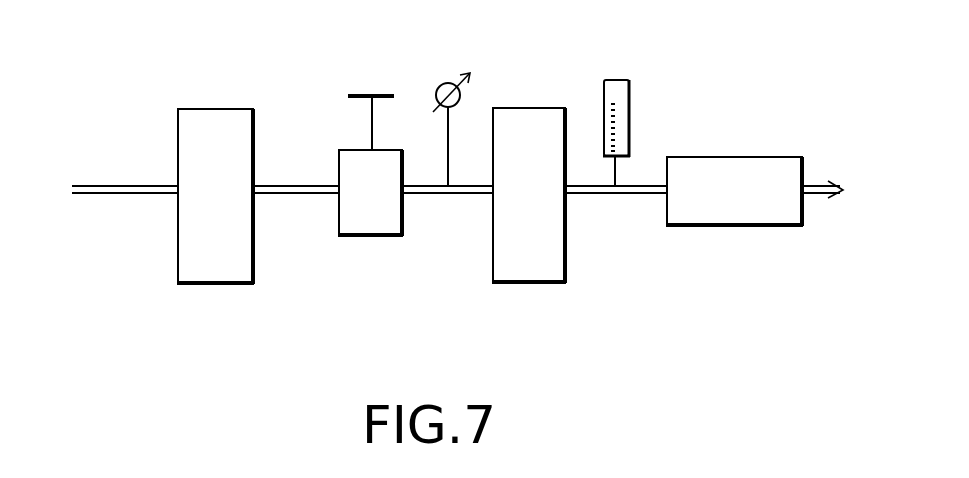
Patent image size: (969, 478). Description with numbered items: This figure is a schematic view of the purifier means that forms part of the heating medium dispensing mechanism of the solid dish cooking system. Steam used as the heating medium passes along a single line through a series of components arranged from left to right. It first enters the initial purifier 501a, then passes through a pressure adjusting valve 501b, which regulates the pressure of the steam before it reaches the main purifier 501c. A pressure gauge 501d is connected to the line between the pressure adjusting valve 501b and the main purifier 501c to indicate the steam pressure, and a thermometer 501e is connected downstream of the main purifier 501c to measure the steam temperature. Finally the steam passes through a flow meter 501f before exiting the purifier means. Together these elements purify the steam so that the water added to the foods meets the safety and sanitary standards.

The initial purifier 501a is at (206, 284).
The pressure adjusting valve 501b is at (378, 236).
The main purifier 501c is at (540, 283).
The pressure gauge 501d is at (450, 72).
The thermometer 501e is at (625, 77).
The flow meter 501f is at (760, 226).